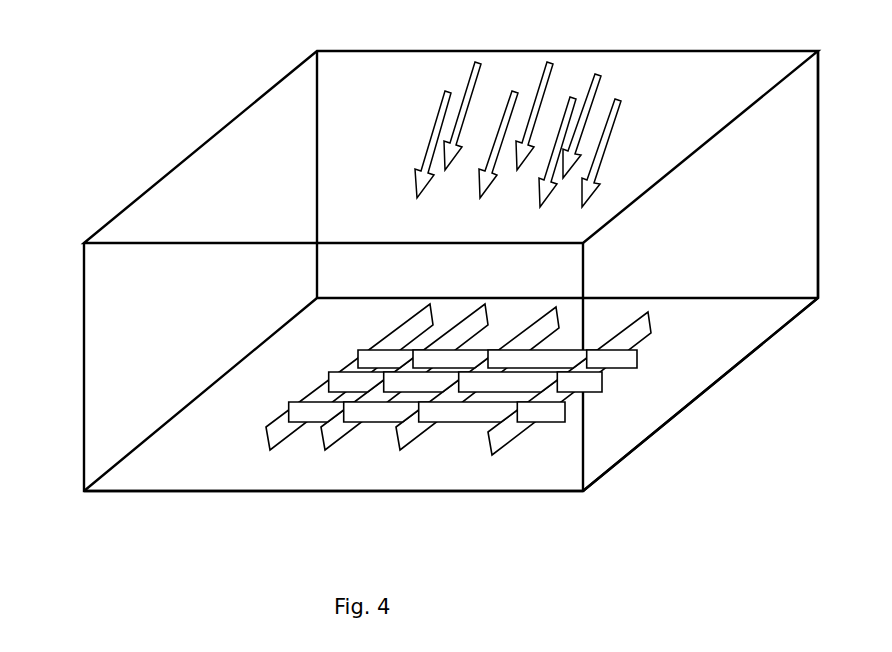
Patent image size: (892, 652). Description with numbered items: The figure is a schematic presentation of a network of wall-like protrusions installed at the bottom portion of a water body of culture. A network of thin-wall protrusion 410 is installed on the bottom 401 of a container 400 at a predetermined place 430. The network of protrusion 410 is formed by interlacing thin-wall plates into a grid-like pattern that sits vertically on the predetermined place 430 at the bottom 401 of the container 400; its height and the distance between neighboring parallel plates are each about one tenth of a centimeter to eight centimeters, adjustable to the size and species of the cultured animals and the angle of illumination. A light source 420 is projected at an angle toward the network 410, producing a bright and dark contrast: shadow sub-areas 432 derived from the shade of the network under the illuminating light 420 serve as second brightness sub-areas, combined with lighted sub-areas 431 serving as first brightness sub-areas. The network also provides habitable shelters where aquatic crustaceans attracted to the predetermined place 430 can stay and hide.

The container 400 is at (260, 97).
The bottom 401 is at (156, 472).
The network of thin-wall protrusion 410 is at (547, 390).
The light source 420 is at (557, 67).
The predetermined place 430 is at (411, 434).
The lighted sub-areas 431 is at (442, 435).
The shadow sub-areas 432 is at (395, 438).